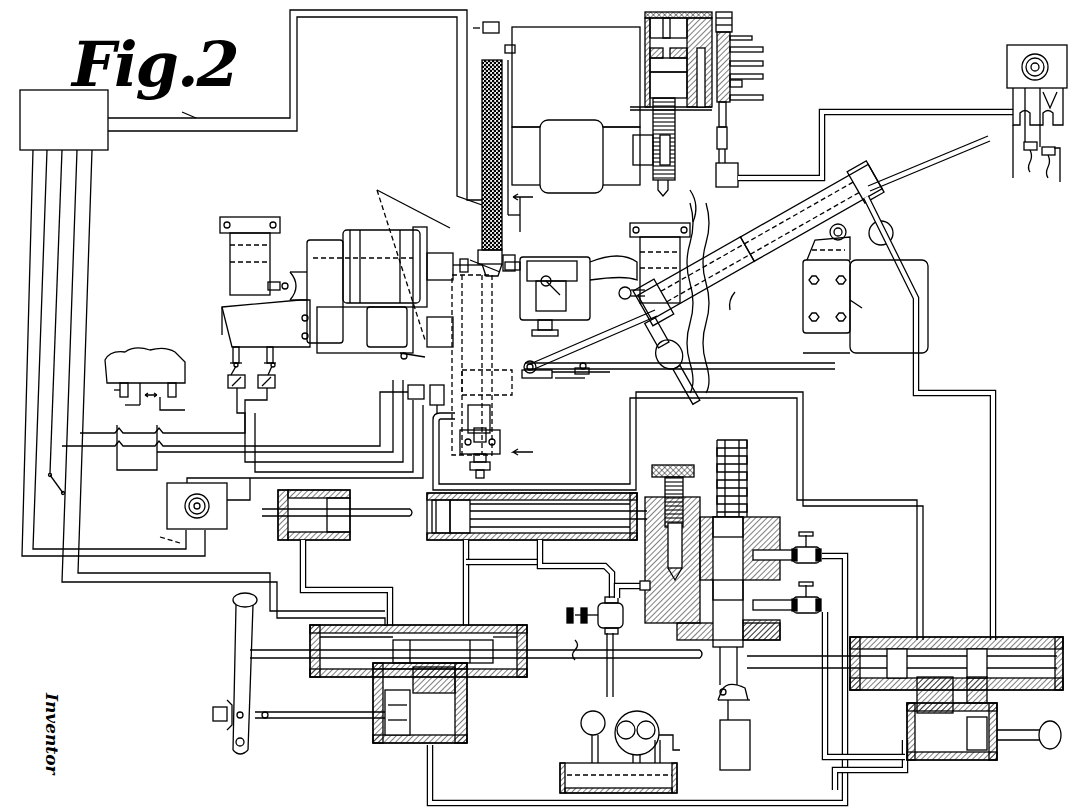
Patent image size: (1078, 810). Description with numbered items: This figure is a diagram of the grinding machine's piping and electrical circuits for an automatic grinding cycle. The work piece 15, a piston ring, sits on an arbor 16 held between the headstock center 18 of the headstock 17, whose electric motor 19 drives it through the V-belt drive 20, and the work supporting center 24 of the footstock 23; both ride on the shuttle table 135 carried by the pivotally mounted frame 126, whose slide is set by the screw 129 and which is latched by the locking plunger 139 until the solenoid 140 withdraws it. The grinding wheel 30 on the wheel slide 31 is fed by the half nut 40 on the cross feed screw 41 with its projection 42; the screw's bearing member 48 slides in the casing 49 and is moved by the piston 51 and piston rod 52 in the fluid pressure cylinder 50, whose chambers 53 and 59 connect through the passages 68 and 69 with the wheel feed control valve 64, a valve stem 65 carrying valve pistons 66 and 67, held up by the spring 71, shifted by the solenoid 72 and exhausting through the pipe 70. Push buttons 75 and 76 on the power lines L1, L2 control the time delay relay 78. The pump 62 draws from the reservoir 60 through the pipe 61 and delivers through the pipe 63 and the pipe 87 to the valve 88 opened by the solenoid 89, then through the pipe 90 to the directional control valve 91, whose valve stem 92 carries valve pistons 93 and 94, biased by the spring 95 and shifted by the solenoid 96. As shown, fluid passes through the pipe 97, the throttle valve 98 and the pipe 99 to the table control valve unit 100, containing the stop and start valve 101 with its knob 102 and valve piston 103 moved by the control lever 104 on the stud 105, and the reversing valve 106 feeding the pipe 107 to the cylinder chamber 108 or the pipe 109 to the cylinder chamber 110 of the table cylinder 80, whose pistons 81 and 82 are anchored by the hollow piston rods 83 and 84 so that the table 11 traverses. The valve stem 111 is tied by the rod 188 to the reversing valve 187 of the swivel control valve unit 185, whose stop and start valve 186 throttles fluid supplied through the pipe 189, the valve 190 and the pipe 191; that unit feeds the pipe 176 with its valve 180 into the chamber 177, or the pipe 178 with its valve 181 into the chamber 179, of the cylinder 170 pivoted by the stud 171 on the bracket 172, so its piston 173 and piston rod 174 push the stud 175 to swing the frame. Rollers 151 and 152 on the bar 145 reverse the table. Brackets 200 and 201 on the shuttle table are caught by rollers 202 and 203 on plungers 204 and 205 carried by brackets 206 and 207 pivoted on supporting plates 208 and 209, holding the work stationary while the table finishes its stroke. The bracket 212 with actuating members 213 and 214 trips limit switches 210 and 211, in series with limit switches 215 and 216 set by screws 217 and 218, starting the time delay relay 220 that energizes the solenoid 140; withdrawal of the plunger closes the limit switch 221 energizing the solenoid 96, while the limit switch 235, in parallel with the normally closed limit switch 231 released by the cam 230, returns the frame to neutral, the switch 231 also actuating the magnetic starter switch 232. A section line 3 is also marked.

The magnetic starter switch 232 is at (100, 140).
The line conductor L1 is at (45, 188).
The line conductor L2 is at (32, 178).
The shuttle table 135 is at (125, 350).
The adjustable screw 217 is at (114, 391).
The limit switch 215 is at (140, 395).
The adjustable screw 218 is at (176, 390).
The limit switch 216 is at (186, 404).
The limit switch 210 is at (228, 380).
The limit switch 211 is at (278, 393).
The electrical time delay relay 220 is at (167, 495).
The supporting plate 208 is at (228, 214).
The bracket 206 is at (230, 240).
The plunger 204 is at (268, 284).
The bracket 200 is at (292, 278).
The roller 202 is at (280, 298).
The bracket 212 is at (222, 318).
The actuating member 213 is at (233, 355).
The actuating member 214 is at (273, 360).
The headstock 17 is at (355, 232).
The electric motor 19 is at (380, 340).
The multiple V-belt drive 20 is at (418, 220).
The headstock center 18 is at (446, 238).
The solenoid 140 is at (453, 340).
The actuating roller 151 is at (404, 360).
The limit switch 221 is at (408, 393).
The limit switch 235 is at (432, 392).
The grinding wheel 30 is at (482, 188).
The limit switch 231 is at (500, 25).
The abutment or cam 230 is at (505, 49).
The work piece 15 is at (488, 250).
The supporting arbor 16 is at (472, 258).
The section line 3 is at (528, 210).
The work supporting center 24 is at (526, 258).
The footstock 23 is at (560, 262).
The bracket 207 is at (640, 246).
The plunger 205 is at (650, 283).
The bracket 201 is at (616, 268).
The roller 203 is at (620, 298).
The piston 173 is at (752, 253).
The cylinder chamber 179 is at (795, 222).
The cylinder chamber 177 is at (745, 275).
The fluid pressure cylinder 170 is at (732, 311).
The valve 181 is at (894, 233).
The valve 180 is at (673, 361).
The piston rod 174 is at (620, 330).
The stud 175 is at (534, 372).
The actuating roller 152 is at (585, 373).
The slidably mounted bar 145 is at (570, 380).
The locking plunger 139 is at (505, 385).
The pivotally mounted frame 126 is at (500, 440).
The screw 129 is at (490, 468).
The work supporting table 11 is at (832, 370).
The stud 171 is at (843, 285).
The bracket 172 is at (867, 310).
The pipe 176 is at (803, 442).
The pipe 178 is at (960, 390).
The wheel slide 31 is at (556, 32).
The half nut 40 is at (645, 136).
The cross feed screw 41 is at (678, 160).
The forwardly extending projection 42 is at (650, 190).
The passage 68 is at (695, 107).
The fluid pressure cylinder 50 is at (645, 20).
The piston 51 is at (650, 30).
The cylinder chamber 53 is at (650, 53).
The piston rod 52 is at (670, 56).
The casing 49 is at (650, 68).
The bearing member 48 is at (650, 88).
The spring 71 is at (732, 18).
The cylinder chamber 59 is at (749, 31).
The pipe 70 is at (765, 42).
The valve piston 67 is at (765, 58).
The passage 69 is at (765, 70).
The pipe 63 is at (765, 80).
The valve piston 66 is at (742, 84).
The wheel feed control valve 64 is at (732, 100).
The valve stem 65 is at (728, 138).
The electric solenoid 72 is at (738, 186).
The supporting plate 209 is at (685, 220).
The adjustable electrical time delay relay 78 is at (1007, 60).
The push button 75 is at (1026, 164).
The push button 76 is at (1048, 172).
The hollow piston rod 83 is at (385, 508).
The cylinder chamber 108 is at (330, 520).
The fluid pressure cylinder 80 is at (563, 492).
The piston 81 is at (438, 535).
The piston 82 is at (460, 535).
The hollow piston rod 84 is at (592, 510).
The pipe 107 is at (330, 580).
The pipe 109 is at (490, 570).
The cylinder chamber 110 is at (535, 570).
The reversing valve 106 is at (322, 670).
The pipe 87 is at (618, 637).
The valve stem 111 is at (590, 650).
The table control valve unit 100 is at (375, 745).
The valve piston 103 is at (398, 735).
The stop and start valve 101 is at (320, 718).
The manually operable control lever 104 is at (238, 658).
The knob 102 is at (218, 707).
The stud 105 is at (236, 745).
The valve 88 is at (600, 605).
The solenoid 89 is at (570, 608).
The pipe 90 is at (628, 583).
The reservoir 60 is at (560, 773).
The pipe 61 is at (662, 720).
The motor driven fluid pressure pump 62 is at (630, 748).
The spring 95 is at (748, 466).
The directional control valve 91 is at (770, 517).
The valve piston 94 is at (738, 530).
The pipe 97 is at (785, 548).
The throttle valve 98 is at (810, 545).
The pipe 99 is at (848, 572).
The pipe 189 is at (785, 598).
The valve 190 is at (820, 605).
The pipe 191 is at (835, 625).
The valve piston 93 is at (780, 630).
The valve stem 92 is at (742, 680).
The solenoid 96 is at (750, 740).
The rod 188 is at (790, 662).
The reversing valve 187 is at (1000, 645).
The swivel control valve unit 185 is at (995, 760).
The stop and start valve 186 is at (1015, 740).